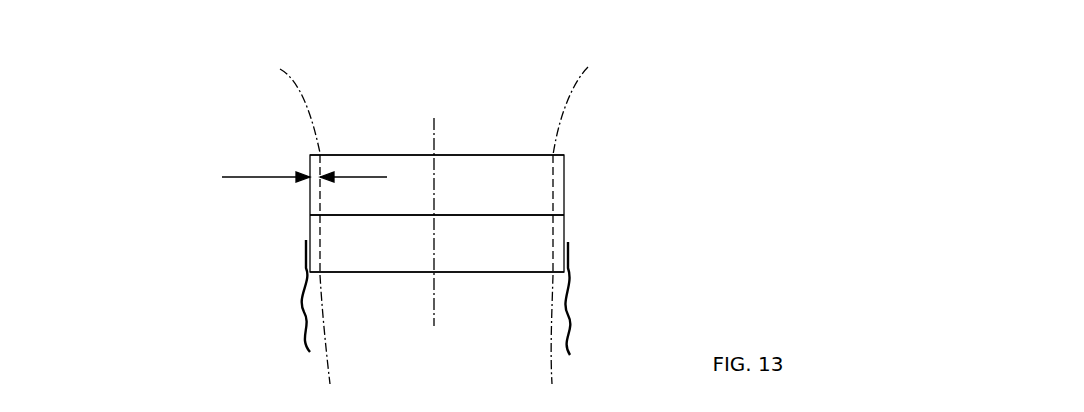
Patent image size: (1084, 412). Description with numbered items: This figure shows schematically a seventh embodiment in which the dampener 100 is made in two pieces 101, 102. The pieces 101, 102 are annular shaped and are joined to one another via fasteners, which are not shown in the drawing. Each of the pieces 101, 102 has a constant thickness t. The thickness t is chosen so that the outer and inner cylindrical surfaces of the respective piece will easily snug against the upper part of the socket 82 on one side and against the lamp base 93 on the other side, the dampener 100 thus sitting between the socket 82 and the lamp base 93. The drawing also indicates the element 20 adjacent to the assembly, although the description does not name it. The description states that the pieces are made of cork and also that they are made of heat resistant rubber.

The substrate 20 is at (437, 293).
The socket 82 is at (304, 296).
The lamp base 93 is at (562, 87).
The dampener 100 is at (670, 206).
The first piece 101 is at (565, 174).
The second piece 102 is at (565, 225).
The thickness t is at (362, 178).